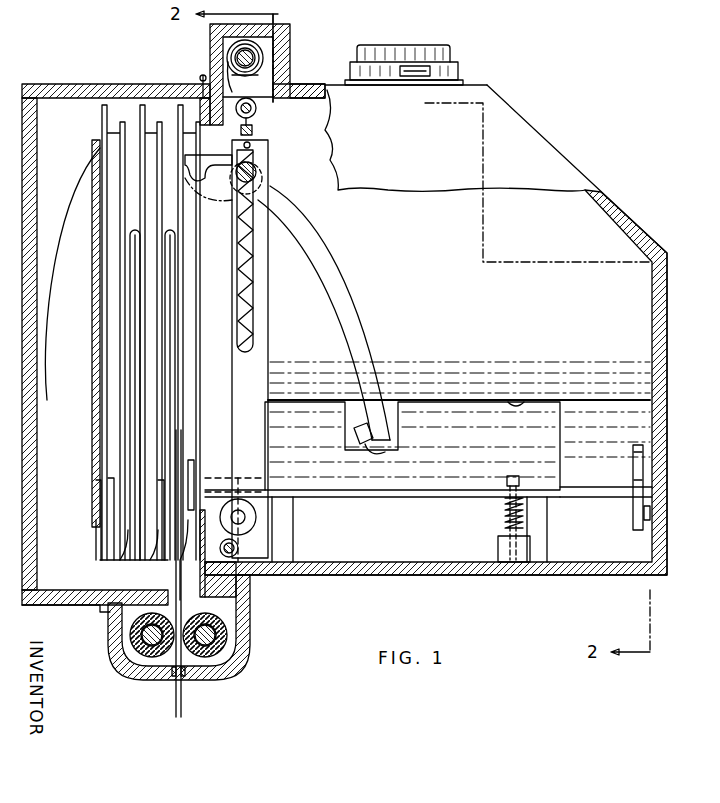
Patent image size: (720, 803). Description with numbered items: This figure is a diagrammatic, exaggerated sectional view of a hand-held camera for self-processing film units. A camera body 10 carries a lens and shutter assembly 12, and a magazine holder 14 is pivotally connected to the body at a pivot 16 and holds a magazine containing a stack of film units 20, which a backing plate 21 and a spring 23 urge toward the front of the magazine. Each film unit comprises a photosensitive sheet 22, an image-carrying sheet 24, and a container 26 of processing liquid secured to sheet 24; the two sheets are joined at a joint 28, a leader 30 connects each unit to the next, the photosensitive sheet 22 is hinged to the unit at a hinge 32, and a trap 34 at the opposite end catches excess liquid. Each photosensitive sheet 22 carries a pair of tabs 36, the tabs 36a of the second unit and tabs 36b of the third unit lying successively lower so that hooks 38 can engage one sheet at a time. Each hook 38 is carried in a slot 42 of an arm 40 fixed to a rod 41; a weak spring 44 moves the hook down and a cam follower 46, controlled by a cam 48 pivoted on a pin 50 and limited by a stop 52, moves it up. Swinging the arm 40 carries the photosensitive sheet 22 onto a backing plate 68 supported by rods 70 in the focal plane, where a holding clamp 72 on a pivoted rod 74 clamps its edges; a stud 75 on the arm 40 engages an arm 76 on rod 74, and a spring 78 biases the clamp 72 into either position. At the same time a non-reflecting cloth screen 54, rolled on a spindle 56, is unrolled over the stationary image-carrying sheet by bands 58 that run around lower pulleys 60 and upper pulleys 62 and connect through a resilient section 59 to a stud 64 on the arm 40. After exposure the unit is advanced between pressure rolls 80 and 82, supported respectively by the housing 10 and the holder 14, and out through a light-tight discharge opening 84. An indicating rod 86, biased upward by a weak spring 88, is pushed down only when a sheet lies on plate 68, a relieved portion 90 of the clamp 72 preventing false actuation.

The camera body 10 is at (600, 200).
The lens and shutter assembly 12 is at (460, 72).
The magazine holder 14 is at (46, 606).
The pivotal connection 16 is at (203, 72).
The film unit 20 is at (97, 537).
The backing plate 21 is at (96, 192).
The photosensitive sheet 22 is at (160, 328).
The spring 23 is at (100, 460).
The image-carrying sheet 24 is at (145, 345).
The container 26 is at (113, 504).
The joint 28 is at (200, 562).
The leader 30 is at (135, 305).
The hinge connection 32 is at (112, 468).
The trap 34 is at (203, 123).
The tabs 36 is at (200, 212).
The tabs 36a is at (158, 228).
The tabs 36b is at (120, 268).
The hooks 38 is at (235, 203).
The arm 40 is at (260, 274).
The rod 41 is at (248, 519).
The slot 42 is at (254, 242).
The weak spring 44 is at (253, 298).
The cam follower 46 is at (256, 172).
The cam 48 is at (326, 268).
The pin 50 is at (264, 182).
The stop 52 is at (380, 458).
The cloth screen 54 is at (215, 40).
The spindle 56 is at (262, 55).
The tapes or bands 58 is at (236, 74).
The resilient section 59 is at (256, 118).
The pulleys 60 is at (238, 556).
The pulleys 62 is at (262, 97).
The stud 64 is at (254, 146).
The backing plate 68 is at (445, 480).
The rods 70 is at (297, 530).
The holding clamp 72 is at (470, 402).
The pivoted rod 74 is at (605, 490).
The stud 75 is at (256, 132).
The arm 76 is at (643, 450).
The spring 78 is at (660, 512).
The pressure roll 80 is at (226, 650).
The pressure roll 82 is at (142, 655).
The light-tight discharge opening 84 is at (172, 682).
The rod 86 is at (515, 476).
The weak spring 88 is at (503, 521).
The relieved portion 90 is at (518, 395).